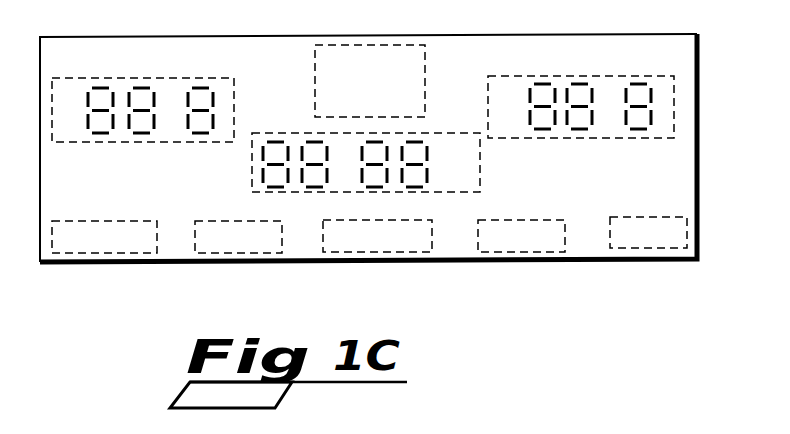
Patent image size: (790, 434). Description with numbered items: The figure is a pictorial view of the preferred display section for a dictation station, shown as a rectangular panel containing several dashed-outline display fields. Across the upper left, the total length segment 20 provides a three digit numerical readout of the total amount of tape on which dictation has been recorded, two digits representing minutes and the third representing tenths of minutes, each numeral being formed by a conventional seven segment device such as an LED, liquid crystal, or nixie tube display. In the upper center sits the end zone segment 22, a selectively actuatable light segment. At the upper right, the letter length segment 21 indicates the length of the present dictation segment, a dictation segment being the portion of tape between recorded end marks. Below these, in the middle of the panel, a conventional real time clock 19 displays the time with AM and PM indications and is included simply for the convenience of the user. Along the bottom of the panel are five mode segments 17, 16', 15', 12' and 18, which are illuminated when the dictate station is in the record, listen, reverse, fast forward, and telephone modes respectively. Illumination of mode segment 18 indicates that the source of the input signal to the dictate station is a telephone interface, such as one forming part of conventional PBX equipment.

The total length segment 20 is at (235, 90).
The end zone segment 22 is at (425, 72).
The letter length segment 21 is at (675, 90).
The real time clock 19 is at (482, 172).
The mode segment 17 is at (130, 252).
The mode segment 16' is at (238, 266).
The mode segment 15' is at (377, 265).
The mode segment 12' is at (521, 265).
The mode segment 18 is at (632, 250).